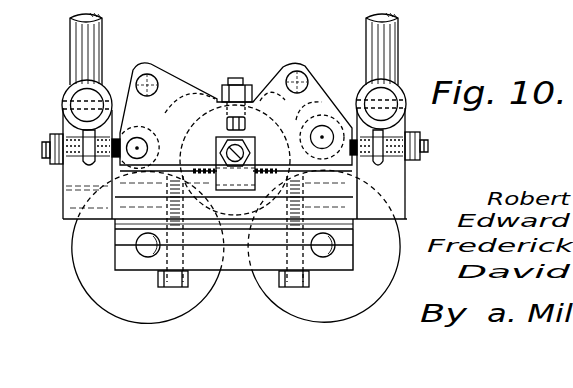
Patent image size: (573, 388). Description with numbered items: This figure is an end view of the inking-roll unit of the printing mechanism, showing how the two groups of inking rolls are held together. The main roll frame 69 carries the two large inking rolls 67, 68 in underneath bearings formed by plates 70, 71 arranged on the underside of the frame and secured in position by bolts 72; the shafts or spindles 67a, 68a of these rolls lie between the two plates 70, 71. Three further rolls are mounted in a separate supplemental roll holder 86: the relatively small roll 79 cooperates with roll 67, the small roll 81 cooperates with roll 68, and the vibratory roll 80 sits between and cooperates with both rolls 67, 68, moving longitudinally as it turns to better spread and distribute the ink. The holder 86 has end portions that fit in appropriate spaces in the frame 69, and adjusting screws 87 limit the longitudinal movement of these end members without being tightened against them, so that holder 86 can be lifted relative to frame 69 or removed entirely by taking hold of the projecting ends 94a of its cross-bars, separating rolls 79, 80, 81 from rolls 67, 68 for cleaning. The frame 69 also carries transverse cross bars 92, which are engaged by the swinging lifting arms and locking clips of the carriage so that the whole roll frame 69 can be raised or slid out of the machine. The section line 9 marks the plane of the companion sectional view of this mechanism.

The section line 9- 9 is at (252, 40).
The inking roll 67 is at (74, 250).
The shaft or spindle 67a is at (147, 240).
The inking roll 68 is at (357, 302).
The shaft or spindle 68a is at (325, 239).
The roll frame 69 is at (398, 172).
The plate 70 is at (348, 232).
The plate 71 is at (348, 260).
The bolt 72 is at (158, 279).
The inking roll 79 is at (147, 138).
The vibratory roll 80 is at (250, 93).
The inking roll 81 is at (341, 108).
The supplemental roll holder 86 is at (133, 77).
The adjusting screw 87 is at (43, 144).
The cross bar 92 is at (72, 101).
The projecting end 94a is at (155, 82).